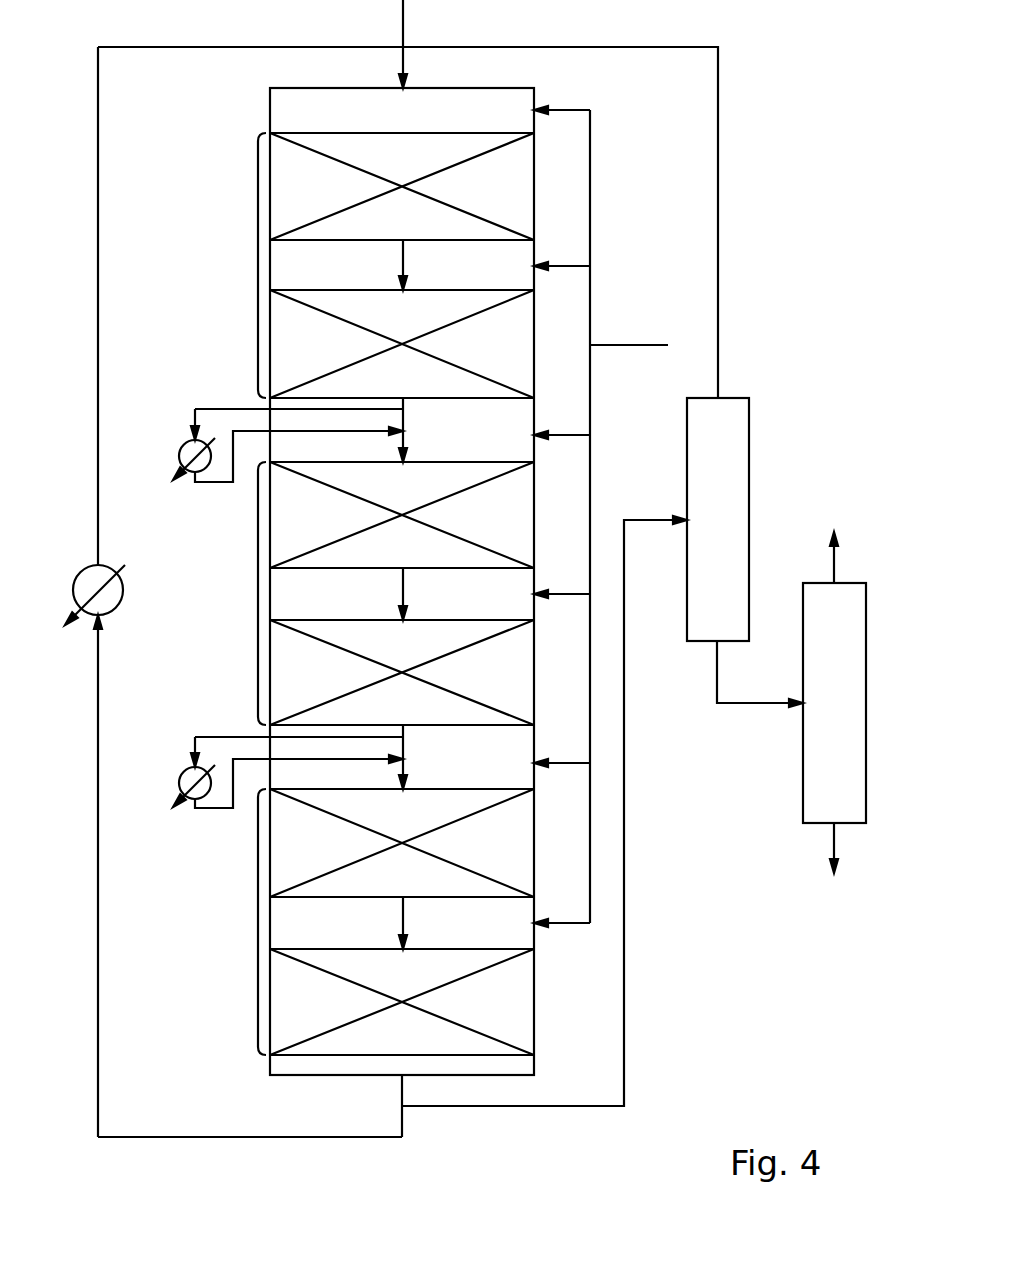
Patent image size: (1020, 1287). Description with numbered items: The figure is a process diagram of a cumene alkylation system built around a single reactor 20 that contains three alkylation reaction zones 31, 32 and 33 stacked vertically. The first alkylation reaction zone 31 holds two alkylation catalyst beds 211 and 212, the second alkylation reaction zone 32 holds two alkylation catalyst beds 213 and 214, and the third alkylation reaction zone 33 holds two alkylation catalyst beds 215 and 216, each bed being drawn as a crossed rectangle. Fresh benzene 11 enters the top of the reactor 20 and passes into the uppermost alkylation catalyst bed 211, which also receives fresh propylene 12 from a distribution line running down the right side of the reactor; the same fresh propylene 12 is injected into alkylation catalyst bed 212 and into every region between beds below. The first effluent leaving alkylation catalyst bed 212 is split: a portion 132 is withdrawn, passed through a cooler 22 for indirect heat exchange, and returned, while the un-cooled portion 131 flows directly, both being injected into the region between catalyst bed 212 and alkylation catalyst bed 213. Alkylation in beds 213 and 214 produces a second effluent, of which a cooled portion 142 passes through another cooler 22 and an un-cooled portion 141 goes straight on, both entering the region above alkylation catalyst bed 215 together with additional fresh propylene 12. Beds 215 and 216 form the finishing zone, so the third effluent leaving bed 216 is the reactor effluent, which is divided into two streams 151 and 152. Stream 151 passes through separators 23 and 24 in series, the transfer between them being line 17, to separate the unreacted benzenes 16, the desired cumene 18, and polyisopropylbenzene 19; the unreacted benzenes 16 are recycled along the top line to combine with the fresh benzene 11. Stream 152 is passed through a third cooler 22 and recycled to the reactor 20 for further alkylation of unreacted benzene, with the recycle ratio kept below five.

The fresh benzene 11 is at (400, 26).
The fresh propylene 12 is at (630, 345).
The unreacted benzenes 16 is at (512, 47).
The transfer line 17 is at (717, 685).
The cumene 18 is at (834, 558).
The polyisopropylbenzene 19 is at (834, 850).
The reactor 20 is at (275, 110).
The cooler 22 is at (181, 452).
The separator 23 is at (749, 440).
The separator 24 is at (803, 795).
The first alkylation reaction zone 31 is at (258, 265).
The second alkylation reaction zone 32 is at (258, 594).
The third alkylation reaction zone 33 is at (258, 922).
The un-cooled portion 131 is at (403, 425).
The cooled portion 132 is at (195, 409).
The un-cooled portion 141 is at (403, 749).
The cooled portion 142 is at (195, 737).
The stream 151 is at (447, 1106).
The stream 152 is at (265, 47).
The alkylation catalyst bed 211 is at (402, 186).
The alkylation catalyst bed 212 is at (402, 344).
The alkylation catalyst bed 213 is at (402, 515).
The alkylation catalyst bed 214 is at (402, 672).
The alkylation catalyst bed 215 is at (402, 843).
The alkylation catalyst bed 216 is at (402, 1002).